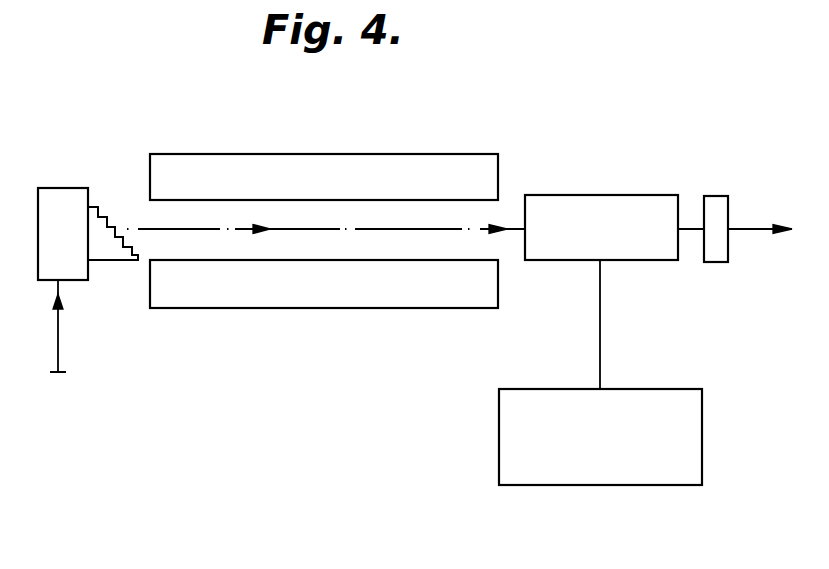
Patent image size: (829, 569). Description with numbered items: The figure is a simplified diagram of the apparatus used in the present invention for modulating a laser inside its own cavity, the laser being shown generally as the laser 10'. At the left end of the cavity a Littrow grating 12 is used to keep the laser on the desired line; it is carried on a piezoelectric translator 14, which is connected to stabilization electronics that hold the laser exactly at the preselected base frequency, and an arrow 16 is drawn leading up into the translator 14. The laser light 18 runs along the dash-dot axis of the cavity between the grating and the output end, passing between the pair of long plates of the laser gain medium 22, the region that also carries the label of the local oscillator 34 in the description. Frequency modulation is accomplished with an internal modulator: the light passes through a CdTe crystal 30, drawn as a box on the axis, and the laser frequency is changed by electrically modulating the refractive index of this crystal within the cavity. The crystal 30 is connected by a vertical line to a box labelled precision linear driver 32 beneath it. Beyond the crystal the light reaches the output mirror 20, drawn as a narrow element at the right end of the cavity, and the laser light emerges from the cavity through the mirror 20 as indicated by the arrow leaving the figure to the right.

The laser 10' is at (95, 112).
The Littrow grating 12 is at (111, 226).
The piezoelectric translator 14 is at (45, 194).
The input arrow / pump 16 is at (58, 341).
The laser light 18 is at (364, 232).
The output mirror 20 is at (720, 202).
The laser gain medium 22 is at (308, 222).
The CdTe crystal 30 is at (617, 197).
The precision linear driver 32 is at (510, 436).
The local oscillator 34 is at (430, 147).